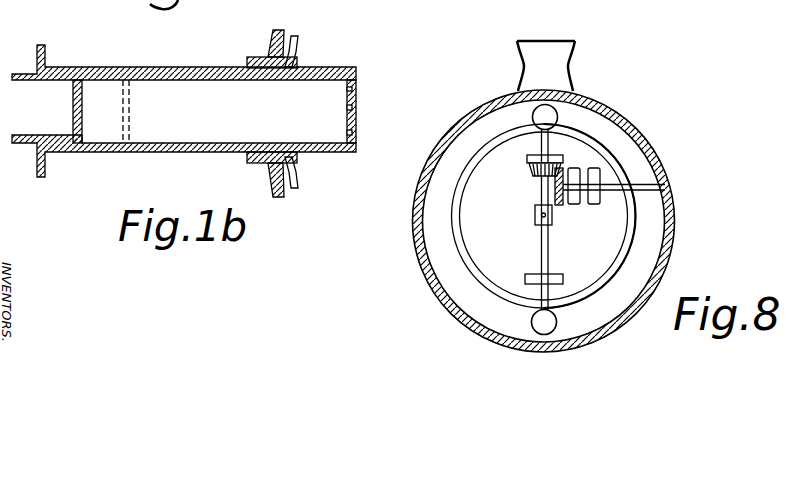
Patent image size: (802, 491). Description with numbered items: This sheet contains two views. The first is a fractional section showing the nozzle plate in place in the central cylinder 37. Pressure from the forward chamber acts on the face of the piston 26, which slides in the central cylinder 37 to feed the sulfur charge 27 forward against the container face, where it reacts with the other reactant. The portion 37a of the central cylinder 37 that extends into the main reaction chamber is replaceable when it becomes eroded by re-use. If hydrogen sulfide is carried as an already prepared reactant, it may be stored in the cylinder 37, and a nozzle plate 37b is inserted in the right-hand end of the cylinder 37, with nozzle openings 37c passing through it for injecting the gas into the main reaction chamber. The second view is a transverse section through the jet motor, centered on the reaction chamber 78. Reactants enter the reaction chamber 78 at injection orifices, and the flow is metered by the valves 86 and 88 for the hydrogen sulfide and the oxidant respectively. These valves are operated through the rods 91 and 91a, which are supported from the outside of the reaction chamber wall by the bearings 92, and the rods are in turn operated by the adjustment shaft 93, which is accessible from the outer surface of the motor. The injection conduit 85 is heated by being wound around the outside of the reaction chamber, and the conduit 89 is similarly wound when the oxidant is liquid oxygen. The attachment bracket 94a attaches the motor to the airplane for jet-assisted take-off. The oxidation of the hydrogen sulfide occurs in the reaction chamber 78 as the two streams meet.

In FIG. 1B, the piston 26 is at (71, 106).
In FIG. 1B, the sulfur charge 27 is at (100, 131).
In FIG. 1B, the central cylinder 37 is at (60, 154).
In FIG. 1B, the portion of the central cylinder 37a is at (222, 154).
In FIG. 1B, the nozzle plate 37b is at (359, 80).
In FIG. 1B, the nozzle openings 37c is at (359, 92).
In FIG. 8, the reaction chamber 78 is at (482, 185).
In FIG. 8, the injection conduit 85 is at (457, 224).
In FIG. 8, the valve 86 is at (533, 111).
In FIG. 8, the valve 88 is at (557, 331).
In FIG. 8, the conduit 89 is at (636, 246).
In FIG. 8, the rod 91 is at (549, 250).
In FIG. 8, the rod 91a is at (549, 142).
In FIG. 8, the bearings 92 is at (536, 278).
In FIG. 8, the adjustment shaft 93 is at (641, 186).
In FIG. 8, the attachment bracket 94a is at (573, 57).